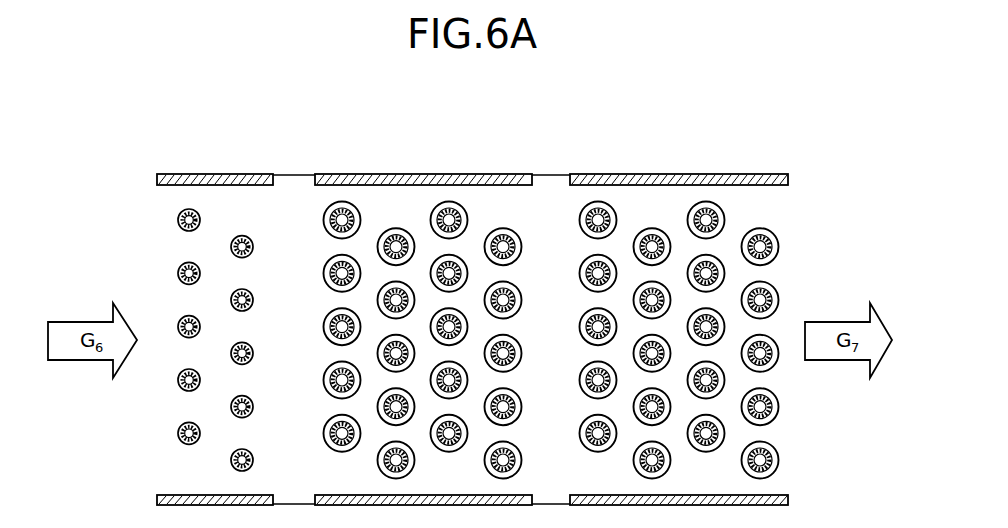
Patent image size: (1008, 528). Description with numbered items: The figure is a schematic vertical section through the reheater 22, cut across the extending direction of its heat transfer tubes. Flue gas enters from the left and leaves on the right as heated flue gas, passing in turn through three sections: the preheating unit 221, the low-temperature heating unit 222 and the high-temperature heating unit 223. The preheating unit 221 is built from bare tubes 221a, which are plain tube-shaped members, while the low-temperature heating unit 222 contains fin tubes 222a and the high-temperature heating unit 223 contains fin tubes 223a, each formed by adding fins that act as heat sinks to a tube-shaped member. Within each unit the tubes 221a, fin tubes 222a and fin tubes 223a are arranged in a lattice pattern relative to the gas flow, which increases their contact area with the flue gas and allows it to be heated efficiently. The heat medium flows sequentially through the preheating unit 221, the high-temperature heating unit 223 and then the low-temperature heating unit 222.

The reheater 22 is at (518, 138).
The preheating unit 221 is at (225, 174).
The low-temperature heating unit 222 is at (427, 174).
The high-temperature heating unit 223 is at (684, 174).
The tube 221a is at (179, 219).
The fin tube 222a is at (324, 219).
The fin tube 223a is at (724, 220).